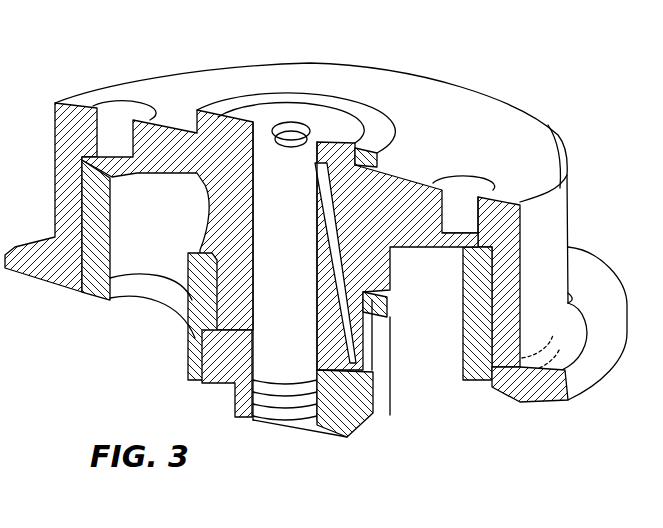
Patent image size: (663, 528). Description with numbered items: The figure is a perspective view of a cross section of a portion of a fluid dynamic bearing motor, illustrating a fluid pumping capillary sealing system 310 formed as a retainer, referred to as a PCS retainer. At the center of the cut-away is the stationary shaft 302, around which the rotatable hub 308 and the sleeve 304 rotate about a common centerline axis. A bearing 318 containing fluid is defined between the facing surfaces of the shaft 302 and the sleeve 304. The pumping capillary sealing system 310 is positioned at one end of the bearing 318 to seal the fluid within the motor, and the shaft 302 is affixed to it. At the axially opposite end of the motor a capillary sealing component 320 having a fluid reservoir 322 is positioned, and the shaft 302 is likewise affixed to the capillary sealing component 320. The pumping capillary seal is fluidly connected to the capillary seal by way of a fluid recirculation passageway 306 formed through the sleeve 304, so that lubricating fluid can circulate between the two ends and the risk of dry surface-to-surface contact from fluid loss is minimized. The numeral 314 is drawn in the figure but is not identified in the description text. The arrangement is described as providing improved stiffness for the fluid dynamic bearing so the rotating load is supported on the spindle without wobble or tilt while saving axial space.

The shaft 302 is at (307, 239).
The sleeve 304 is at (200, 300).
The fluid recirculation passageway 306 is at (333, 213).
The hub 308 is at (170, 130).
The pumping capillary sealing system 310 is at (231, 113).
The outer wall flange 314 is at (87, 284).
The bearing 318 is at (200, 336).
The capillary sealing component 320 is at (358, 418).
The fluid reservoir 322 is at (390, 340).